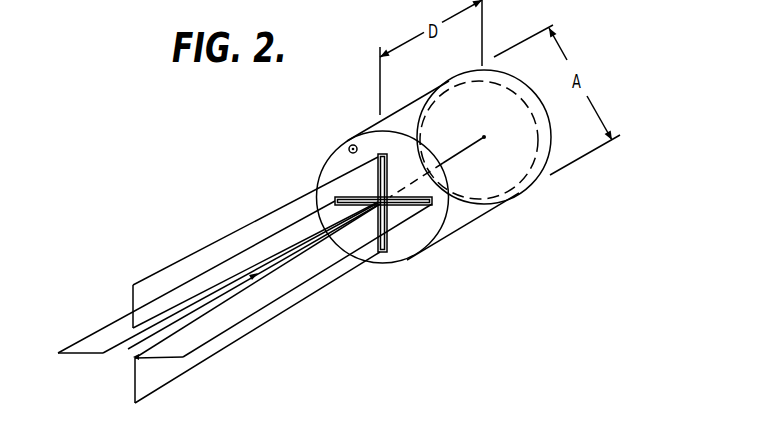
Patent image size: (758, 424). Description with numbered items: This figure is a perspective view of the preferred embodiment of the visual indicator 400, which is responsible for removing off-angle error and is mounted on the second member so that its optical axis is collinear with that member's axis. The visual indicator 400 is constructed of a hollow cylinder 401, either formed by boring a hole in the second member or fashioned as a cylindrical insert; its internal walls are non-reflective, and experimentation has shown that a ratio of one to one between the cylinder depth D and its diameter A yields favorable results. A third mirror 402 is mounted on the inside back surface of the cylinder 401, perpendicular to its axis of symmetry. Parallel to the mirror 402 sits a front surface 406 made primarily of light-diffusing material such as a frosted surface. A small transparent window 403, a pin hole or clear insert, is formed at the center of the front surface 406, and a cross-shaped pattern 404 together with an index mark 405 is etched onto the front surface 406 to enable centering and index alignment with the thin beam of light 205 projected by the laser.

The thin beam of light 205 is at (227, 330).
The visual indicator 400 is at (551, 290).
The hollow cylinder 401 is at (482, 219).
The third mirror 402 is at (513, 163).
The small transparent window 403 is at (384, 190).
The cross-shaped pattern 404 is at (430, 206).
The index mark 405 is at (349, 147).
The front surface 406 is at (393, 262).